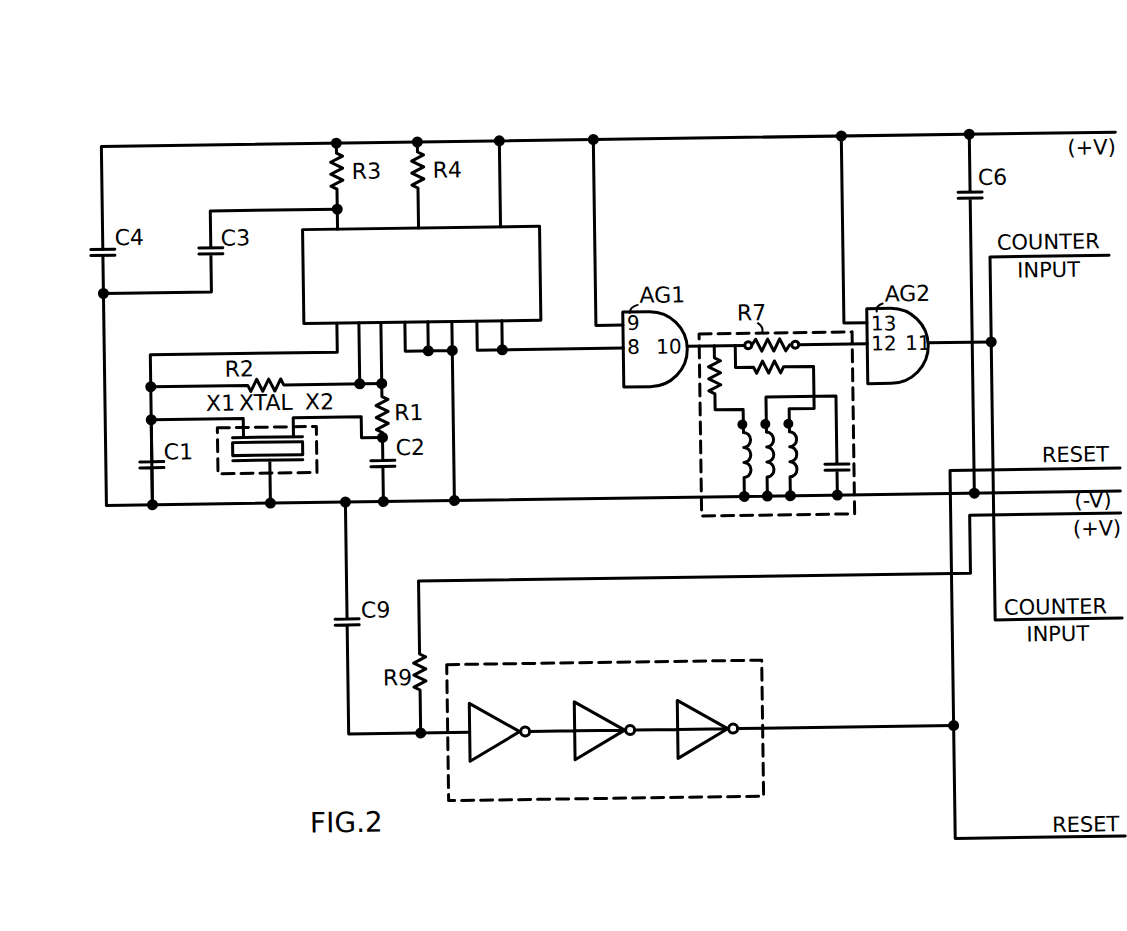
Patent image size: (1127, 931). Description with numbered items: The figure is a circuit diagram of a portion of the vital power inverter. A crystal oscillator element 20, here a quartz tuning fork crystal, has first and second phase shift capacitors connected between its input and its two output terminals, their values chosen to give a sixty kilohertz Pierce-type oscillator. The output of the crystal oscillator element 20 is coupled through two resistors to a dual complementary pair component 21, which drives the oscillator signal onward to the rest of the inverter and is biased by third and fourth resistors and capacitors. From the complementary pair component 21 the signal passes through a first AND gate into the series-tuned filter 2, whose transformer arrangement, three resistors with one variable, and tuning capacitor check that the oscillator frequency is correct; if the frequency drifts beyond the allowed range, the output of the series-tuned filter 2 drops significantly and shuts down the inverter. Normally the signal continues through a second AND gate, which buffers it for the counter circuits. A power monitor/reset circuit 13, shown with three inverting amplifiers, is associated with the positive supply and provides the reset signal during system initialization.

The dual complementary pair component 21 is at (530, 237).
The crystal oscillator element 20 is at (306, 470).
The series-tuned filter 2 is at (704, 468).
The power monitor/reset circuit 13 is at (745, 768).